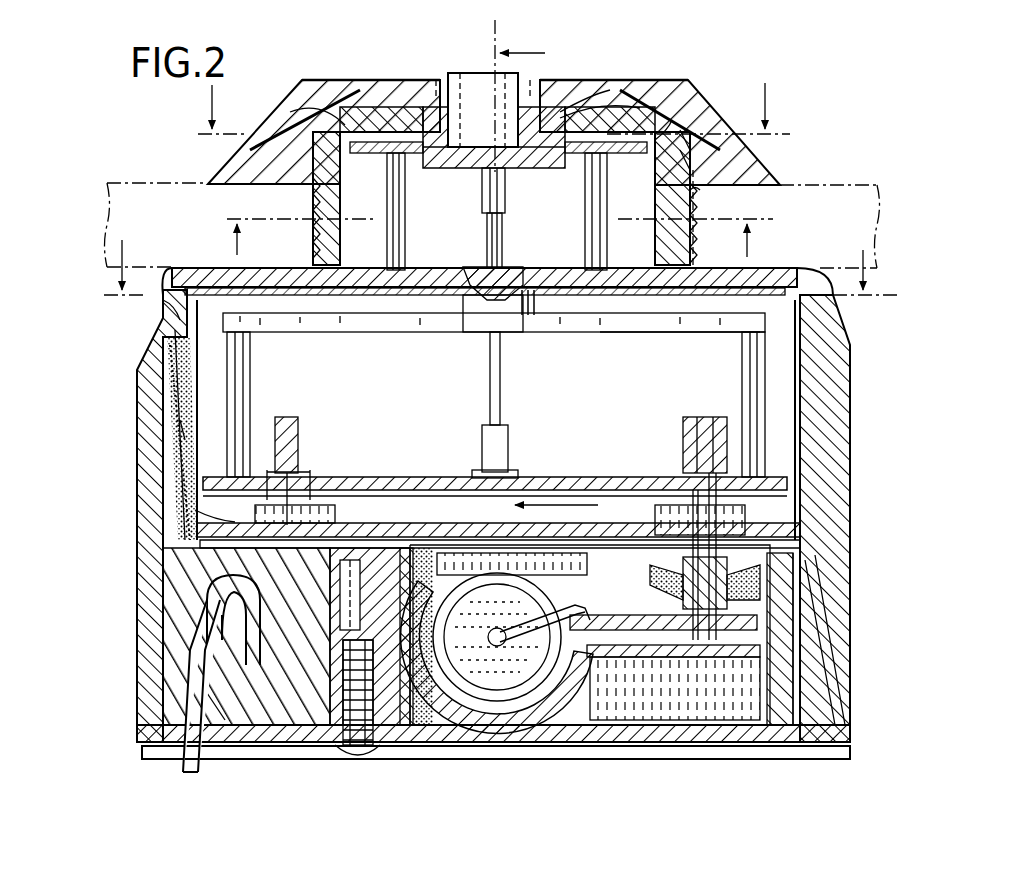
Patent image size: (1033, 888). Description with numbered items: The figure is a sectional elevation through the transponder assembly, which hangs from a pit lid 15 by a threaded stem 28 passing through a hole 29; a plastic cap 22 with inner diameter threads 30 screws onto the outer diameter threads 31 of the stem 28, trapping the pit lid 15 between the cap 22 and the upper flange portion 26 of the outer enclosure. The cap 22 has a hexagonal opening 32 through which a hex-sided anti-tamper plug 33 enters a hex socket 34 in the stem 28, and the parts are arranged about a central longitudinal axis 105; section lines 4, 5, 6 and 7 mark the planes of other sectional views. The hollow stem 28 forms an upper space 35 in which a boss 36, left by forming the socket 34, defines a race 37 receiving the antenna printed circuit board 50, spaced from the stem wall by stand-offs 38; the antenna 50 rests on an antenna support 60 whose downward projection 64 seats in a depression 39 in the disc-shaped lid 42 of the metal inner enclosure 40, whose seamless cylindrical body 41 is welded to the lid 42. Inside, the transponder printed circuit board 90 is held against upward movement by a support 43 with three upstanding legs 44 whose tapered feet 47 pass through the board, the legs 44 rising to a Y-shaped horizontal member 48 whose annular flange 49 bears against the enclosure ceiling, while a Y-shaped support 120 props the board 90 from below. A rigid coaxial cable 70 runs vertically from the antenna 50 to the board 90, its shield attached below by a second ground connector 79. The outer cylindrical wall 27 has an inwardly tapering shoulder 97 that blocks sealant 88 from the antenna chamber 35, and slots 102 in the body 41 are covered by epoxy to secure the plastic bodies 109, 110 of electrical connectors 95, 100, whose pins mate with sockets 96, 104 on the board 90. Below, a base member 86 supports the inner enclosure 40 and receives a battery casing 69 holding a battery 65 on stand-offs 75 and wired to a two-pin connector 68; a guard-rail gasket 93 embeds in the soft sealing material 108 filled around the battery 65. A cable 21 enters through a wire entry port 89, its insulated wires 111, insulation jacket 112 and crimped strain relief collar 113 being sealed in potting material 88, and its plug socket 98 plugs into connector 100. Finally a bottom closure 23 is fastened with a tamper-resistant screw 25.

The section line 4- 4 is at (549, 280).
The section line 5- 5 is at (494, 122).
The section line 6- 6 is at (500, 224).
The section line 7- 7 is at (500, 281).
The pit lid 15 is at (107, 185).
The cable 21 is at (180, 755).
The cap 22 is at (350, 88).
The bottom closure 23 is at (287, 728).
The screw 25 is at (360, 752).
The upper flange portion 26 is at (235, 270).
The cylindrical wall 27 is at (137, 560).
The threaded stem 28 is at (694, 243).
The hole 29 is at (700, 193).
The inner diameter threads 30 is at (690, 142).
The outer diameter threads 31 is at (700, 112).
The hexagonal opening 32 is at (580, 88).
The anti-tamper plug 33 is at (478, 74).
The hex socket 34 is at (580, 100).
The space 35 is at (312, 112).
The boss 36 is at (520, 172).
The race 37 is at (430, 110).
The stand-offs 38 is at (410, 155).
The depression 39 is at (522, 305).
The inner enclosure 40 is at (185, 415).
The cylindrical body 41 is at (190, 432).
The lid 42 is at (180, 332).
The support 43 is at (640, 338).
The upstanding legs 44 is at (250, 372).
The feet 47 is at (215, 520).
The Y-shaped horizontal member 48 is at (388, 333).
The annular flange 49 is at (488, 320).
The antenna 50 is at (670, 118).
The antenna support 60 is at (410, 232).
The projection 64 is at (505, 278).
The battery 65 is at (486, 685).
The connector 68 is at (652, 600).
The battery casing 69 is at (601, 635).
The rigid coaxial cable 70 is at (490, 398).
The stand-offs 75 is at (535, 672).
The second ground connector 79 is at (482, 448).
The base member 86 is at (785, 615).
The potting material 88 is at (300, 722).
The wire entry port 89 is at (205, 752).
The transponder printed circuit board 90 is at (388, 476).
The gasket 93 is at (445, 523).
The electrical connector 95 is at (688, 458).
The socket 96 is at (688, 430).
The inwardly tapering shoulder 97 is at (165, 305).
The plug socket 98 is at (300, 568).
The connector 100 is at (303, 462).
The slots 102 is at (800, 522).
The socket 104 is at (300, 422).
The central longitudinal axis 105 is at (497, 48).
The sealing material 108 is at (580, 685).
The plastic body 109 is at (680, 522).
The plastic body 110 is at (300, 518).
The insulated wires 111 is at (255, 650).
The cable insulation jacket 112 is at (235, 628).
The strain relief collar 113 is at (205, 698).
The Y-shaped support 120 is at (565, 532).